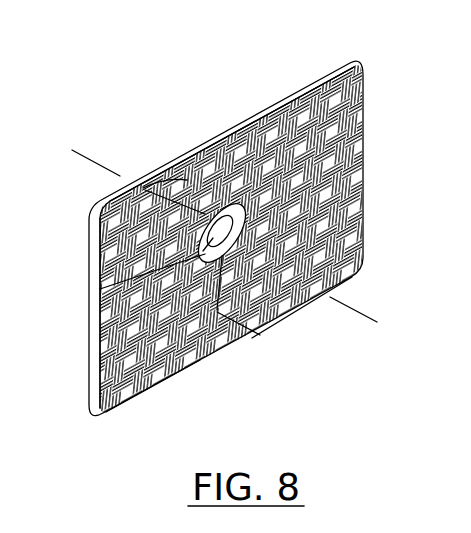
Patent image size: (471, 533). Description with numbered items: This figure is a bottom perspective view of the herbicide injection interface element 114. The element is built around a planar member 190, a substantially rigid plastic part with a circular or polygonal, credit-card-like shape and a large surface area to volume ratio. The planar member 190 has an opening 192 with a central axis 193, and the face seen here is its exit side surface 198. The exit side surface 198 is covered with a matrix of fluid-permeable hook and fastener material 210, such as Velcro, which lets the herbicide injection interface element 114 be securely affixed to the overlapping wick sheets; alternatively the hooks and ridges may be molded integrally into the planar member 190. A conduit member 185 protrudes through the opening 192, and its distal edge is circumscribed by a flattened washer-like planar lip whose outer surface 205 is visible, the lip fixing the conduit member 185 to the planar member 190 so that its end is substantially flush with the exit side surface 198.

The herbicide injection interface element 114 is at (103, 115).
The conduit member 185 is at (204, 212).
The planar member 190 is at (267, 108).
The central axis 193 is at (93, 161).
The outer surface 205 is at (100, 289).
The opening 192 is at (217, 310).
The exit side surface 198 is at (252, 338).
The matrix of fluid-permeable hook and fastener material 210 is at (147, 397).